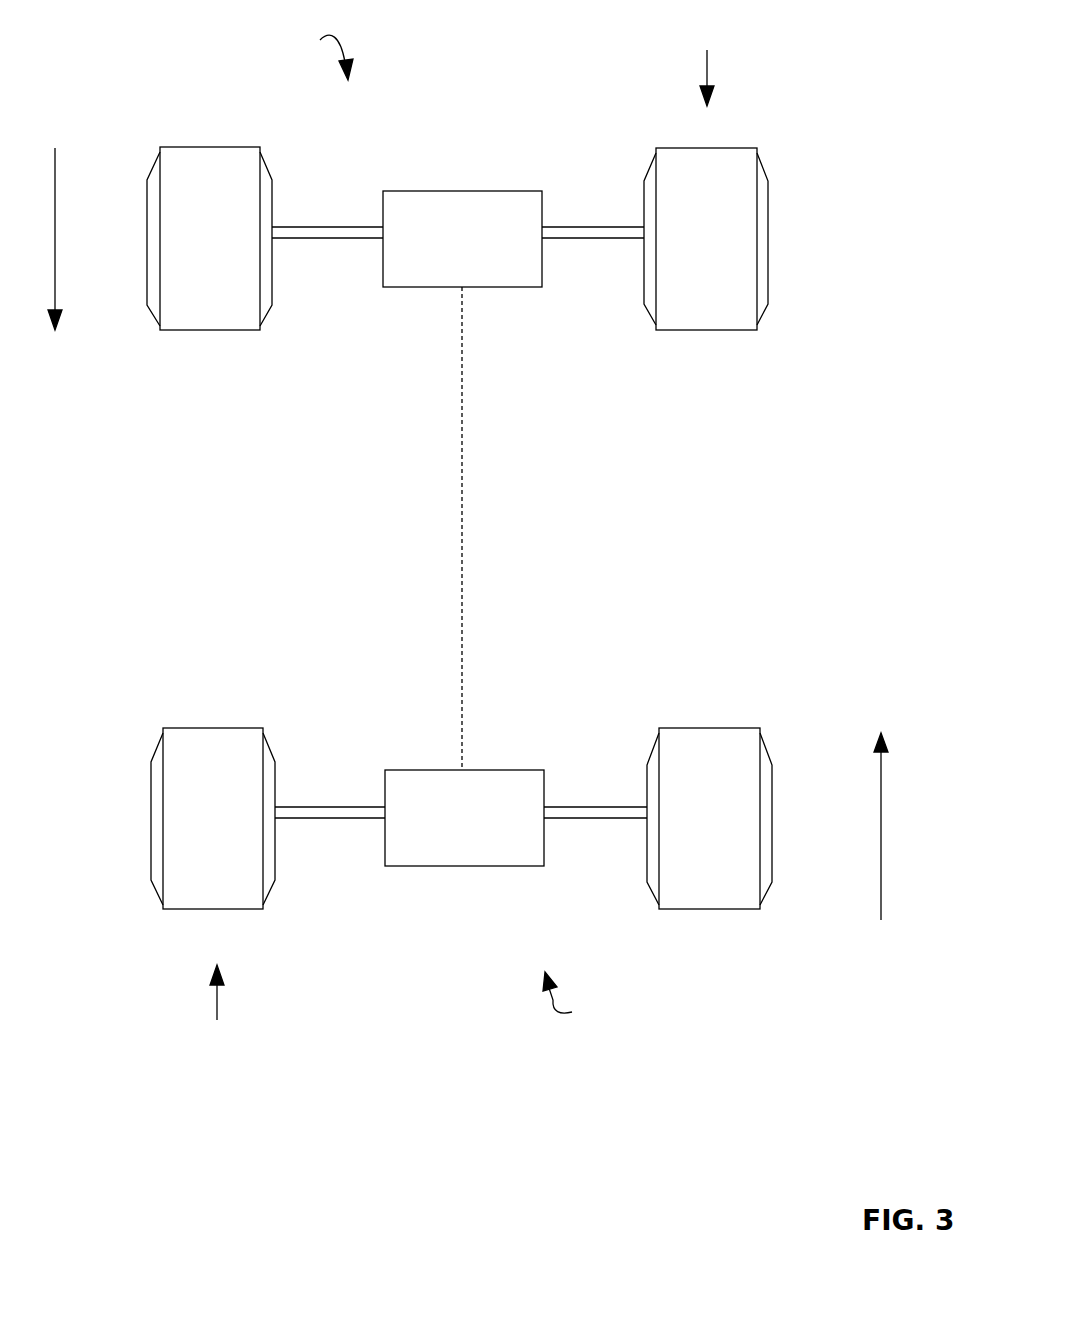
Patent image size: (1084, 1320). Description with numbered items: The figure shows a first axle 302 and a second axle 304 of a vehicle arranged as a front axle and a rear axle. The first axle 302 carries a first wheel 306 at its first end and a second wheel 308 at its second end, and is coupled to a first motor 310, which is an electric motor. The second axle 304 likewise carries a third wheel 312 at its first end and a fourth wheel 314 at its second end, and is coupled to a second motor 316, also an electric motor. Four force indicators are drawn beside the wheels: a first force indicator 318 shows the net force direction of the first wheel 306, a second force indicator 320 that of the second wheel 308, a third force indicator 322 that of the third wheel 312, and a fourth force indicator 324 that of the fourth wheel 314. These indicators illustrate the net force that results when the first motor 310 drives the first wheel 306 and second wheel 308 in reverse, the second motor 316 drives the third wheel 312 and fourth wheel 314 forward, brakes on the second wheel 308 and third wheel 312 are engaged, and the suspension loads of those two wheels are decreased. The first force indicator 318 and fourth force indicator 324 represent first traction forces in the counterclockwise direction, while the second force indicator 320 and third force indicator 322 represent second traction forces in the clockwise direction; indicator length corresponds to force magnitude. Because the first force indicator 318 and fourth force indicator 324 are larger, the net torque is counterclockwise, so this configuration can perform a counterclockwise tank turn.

The first axle 302 is at (309, 50).
The second axle 304 is at (588, 1004).
The first wheel 306 is at (207, 147).
The second wheel 308 is at (748, 148).
The first motor 310 is at (457, 191).
The third wheel 312 is at (215, 728).
The fourth wheel 314 is at (690, 728).
The second motor 316 is at (495, 770).
The first force indicator 318 is at (55, 168).
The second force indicator 320 is at (707, 52).
The third force indicator 322 is at (217, 1008).
The fourth force indicator 324 is at (881, 892).